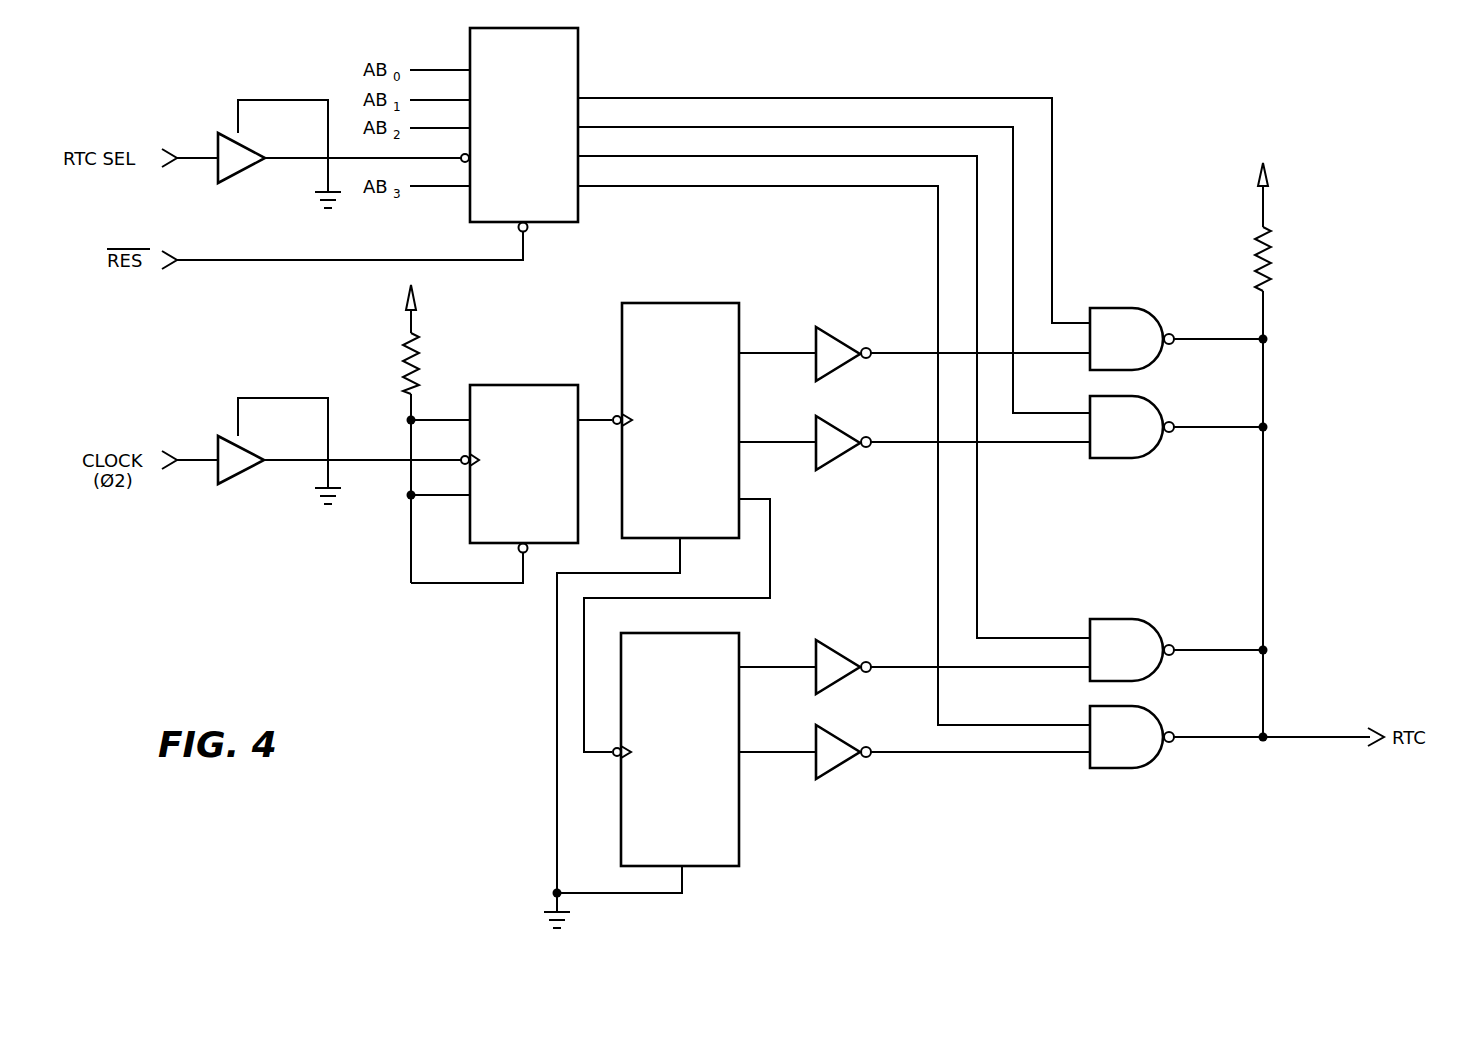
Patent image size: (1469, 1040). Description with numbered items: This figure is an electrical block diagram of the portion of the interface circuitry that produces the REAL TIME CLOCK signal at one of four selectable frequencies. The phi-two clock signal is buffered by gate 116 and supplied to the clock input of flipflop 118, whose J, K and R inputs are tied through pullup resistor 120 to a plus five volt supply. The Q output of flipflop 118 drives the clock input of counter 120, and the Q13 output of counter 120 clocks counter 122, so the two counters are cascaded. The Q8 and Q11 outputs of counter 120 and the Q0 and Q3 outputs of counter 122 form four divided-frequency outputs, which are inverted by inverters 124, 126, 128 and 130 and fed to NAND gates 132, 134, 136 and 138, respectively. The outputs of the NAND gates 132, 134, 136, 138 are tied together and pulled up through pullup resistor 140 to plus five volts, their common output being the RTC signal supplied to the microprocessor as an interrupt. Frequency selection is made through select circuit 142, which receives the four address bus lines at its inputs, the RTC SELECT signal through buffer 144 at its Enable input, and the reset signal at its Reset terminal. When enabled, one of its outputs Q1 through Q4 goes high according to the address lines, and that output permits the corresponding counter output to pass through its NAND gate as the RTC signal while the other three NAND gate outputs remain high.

The gate 116 is at (252, 472).
The flipflop 118 is at (530, 385).
The counter 120 is at (398, 355).
The counter 122 is at (742, 641).
The inverter 124 is at (843, 334).
The inverter 126 is at (845, 456).
The inverter 128 is at (830, 650).
The inverter 130 is at (840, 772).
The NAND gate 132 is at (1143, 308).
The NAND gate 134 is at (1163, 448).
The NAND gate 136 is at (1146, 619).
The NAND gate 138 is at (1158, 767).
The pullup resistor 140 is at (1272, 241).
The select circuit 142 is at (582, 40).
The buffer 144 is at (243, 170).